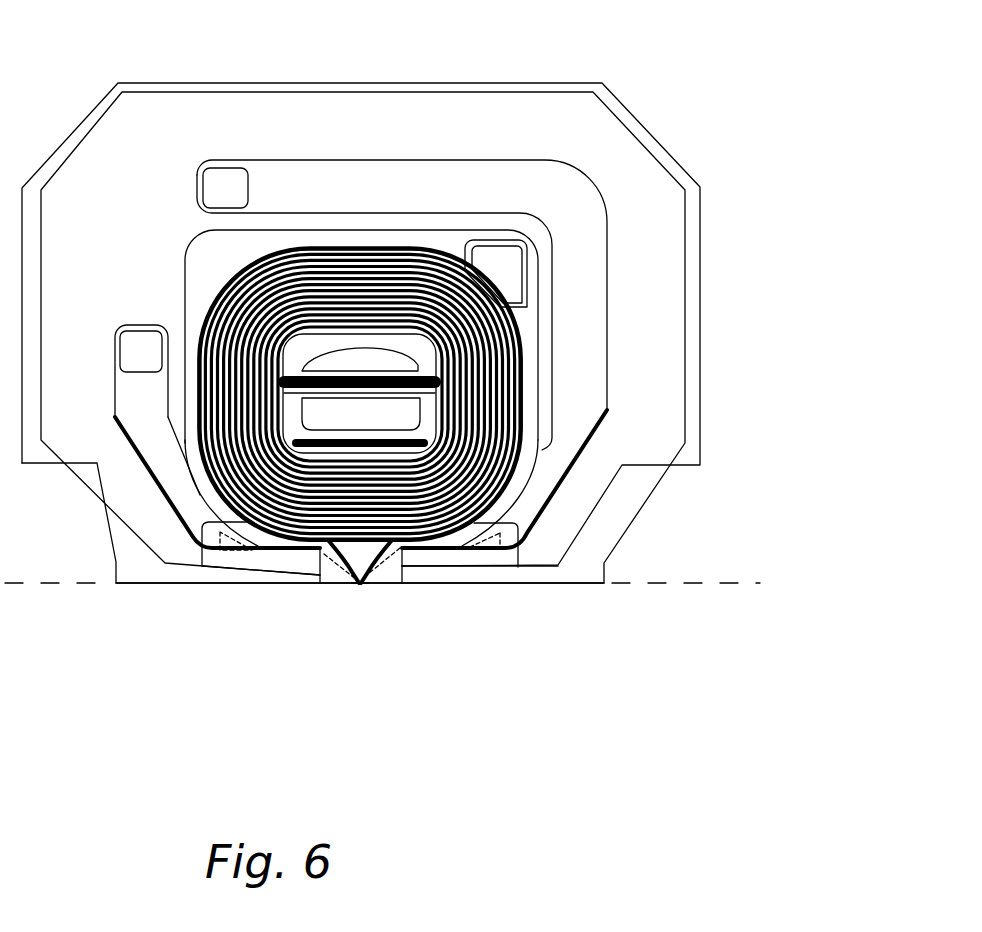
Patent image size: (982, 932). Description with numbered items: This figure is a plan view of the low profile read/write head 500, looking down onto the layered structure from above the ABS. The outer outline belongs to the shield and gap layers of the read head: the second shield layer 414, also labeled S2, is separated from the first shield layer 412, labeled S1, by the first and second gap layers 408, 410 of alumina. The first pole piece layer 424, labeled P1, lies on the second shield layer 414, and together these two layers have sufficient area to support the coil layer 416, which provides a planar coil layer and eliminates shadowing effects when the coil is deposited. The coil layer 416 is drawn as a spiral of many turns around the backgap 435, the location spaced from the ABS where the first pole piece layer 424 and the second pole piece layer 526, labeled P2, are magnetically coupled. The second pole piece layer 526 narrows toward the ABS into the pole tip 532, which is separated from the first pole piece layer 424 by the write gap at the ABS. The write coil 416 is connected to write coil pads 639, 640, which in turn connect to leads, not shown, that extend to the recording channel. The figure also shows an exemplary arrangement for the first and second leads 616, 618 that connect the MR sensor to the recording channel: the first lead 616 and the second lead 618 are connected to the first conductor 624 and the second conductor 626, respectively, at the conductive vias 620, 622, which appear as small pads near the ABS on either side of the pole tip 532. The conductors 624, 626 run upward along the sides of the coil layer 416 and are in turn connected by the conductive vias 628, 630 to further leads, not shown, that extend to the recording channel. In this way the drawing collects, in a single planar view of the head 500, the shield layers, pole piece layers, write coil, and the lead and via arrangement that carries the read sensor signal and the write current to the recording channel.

The low profile read/write head 500 is at (408, 299).
The first gap layer 408 is at (408, 333).
The second gap layer 410 is at (700, 236).
The conductive via 628 is at (232, 198).
The first conductor 624 is at (590, 360).
The write coil pad 639 is at (500, 273).
The conductive via 630 is at (150, 362).
The second conductor 626 is at (150, 412).
The coil layer 416 is at (254, 283).
The write coil pad 640 is at (366, 369).
The backgap 435 is at (364, 425).
The conductive via 622 is at (227, 550).
The conductive via 620 is at (515, 552).
The second lead 618 is at (280, 566).
The first lead 616 is at (462, 566).
The second pole piece P2 is at (348, 604).
The second pole piece layer 526 is at (348, 608).
The pole tip 532 is at (360, 583).
The second shield layer S2 is at (380, 608).
The first pole piece P1 is at (380, 608).
The second shield layer 414 is at (380, 608).
The first pole piece layer 424 is at (399, 566).
The first shield layer S1 is at (361, 616).
The first shield layer 412 is at (585, 583).
The air bearing surface ABS is at (660, 586).